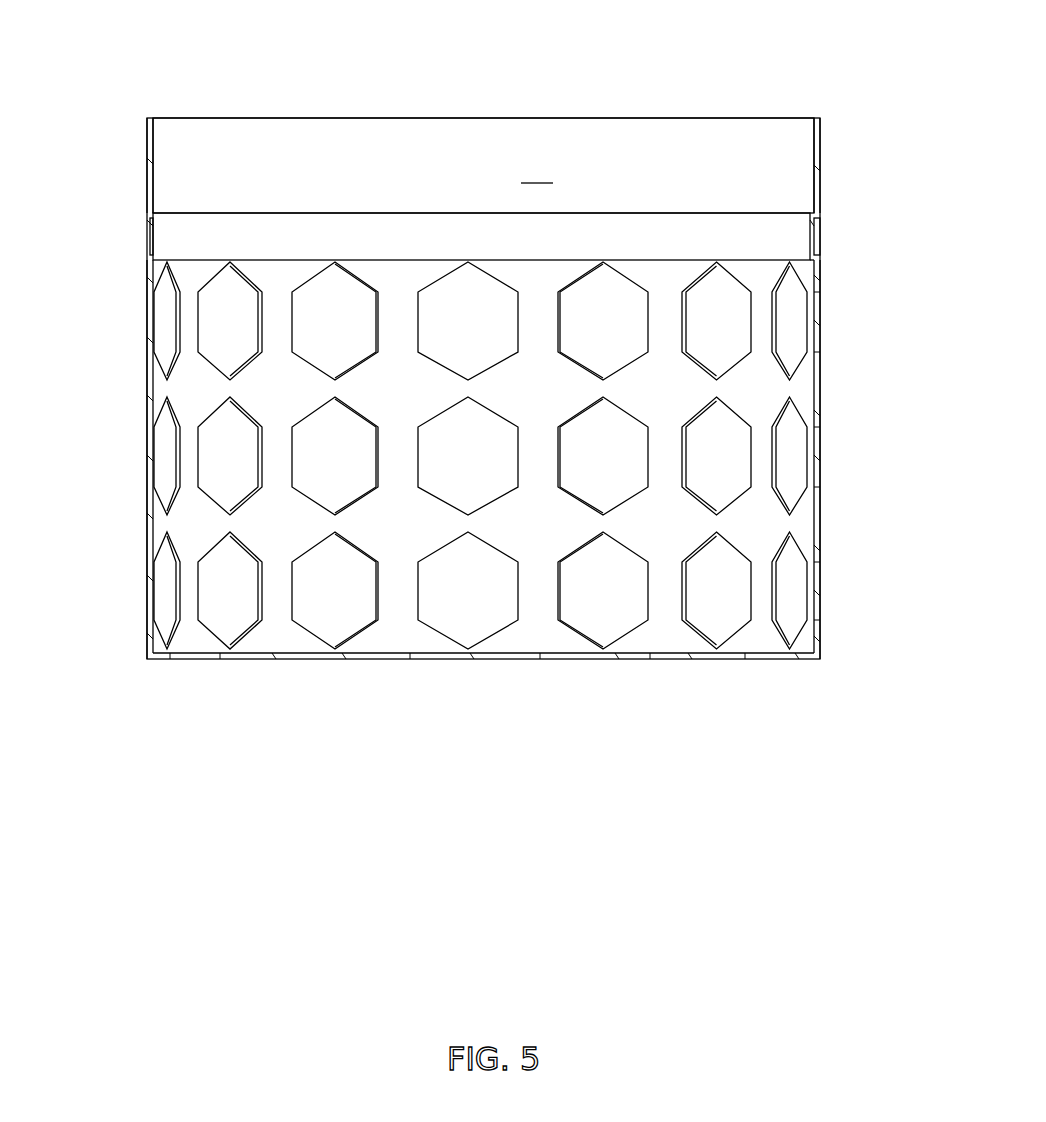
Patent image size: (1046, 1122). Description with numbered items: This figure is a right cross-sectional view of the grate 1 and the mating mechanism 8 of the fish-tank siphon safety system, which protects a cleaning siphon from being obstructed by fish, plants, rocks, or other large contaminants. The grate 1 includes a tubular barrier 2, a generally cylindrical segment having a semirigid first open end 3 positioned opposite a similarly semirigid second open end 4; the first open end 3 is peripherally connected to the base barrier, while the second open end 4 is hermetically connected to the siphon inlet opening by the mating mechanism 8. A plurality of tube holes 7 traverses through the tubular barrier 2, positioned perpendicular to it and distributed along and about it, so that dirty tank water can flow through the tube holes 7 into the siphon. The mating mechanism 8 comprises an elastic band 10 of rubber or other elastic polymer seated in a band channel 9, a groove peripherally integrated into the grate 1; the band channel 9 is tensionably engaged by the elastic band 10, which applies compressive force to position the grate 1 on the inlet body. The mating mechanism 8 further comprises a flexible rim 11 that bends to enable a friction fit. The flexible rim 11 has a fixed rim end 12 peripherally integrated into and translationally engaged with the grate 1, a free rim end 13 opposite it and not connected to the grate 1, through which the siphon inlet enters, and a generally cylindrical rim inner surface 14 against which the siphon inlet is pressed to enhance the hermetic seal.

The grate 1 is at (210, 710).
The tubular barrier 2 is at (710, 641).
The first open end 3 is at (130, 572).
The second open end 4 is at (132, 327).
The plurality of tube holes 7 is at (818, 590).
The mating mechanism 8 is at (485, 107).
The band channel 9 is at (815, 243).
The elastic band 10 is at (816, 226).
The flexible rim 11 is at (440, 133).
The fixed rim end 12 is at (828, 190).
The free rim end 13 is at (138, 150).
The rim inner surface 14 is at (537, 167).